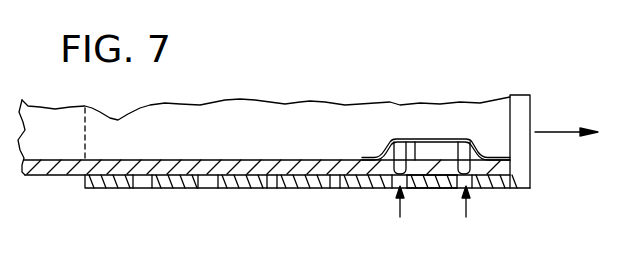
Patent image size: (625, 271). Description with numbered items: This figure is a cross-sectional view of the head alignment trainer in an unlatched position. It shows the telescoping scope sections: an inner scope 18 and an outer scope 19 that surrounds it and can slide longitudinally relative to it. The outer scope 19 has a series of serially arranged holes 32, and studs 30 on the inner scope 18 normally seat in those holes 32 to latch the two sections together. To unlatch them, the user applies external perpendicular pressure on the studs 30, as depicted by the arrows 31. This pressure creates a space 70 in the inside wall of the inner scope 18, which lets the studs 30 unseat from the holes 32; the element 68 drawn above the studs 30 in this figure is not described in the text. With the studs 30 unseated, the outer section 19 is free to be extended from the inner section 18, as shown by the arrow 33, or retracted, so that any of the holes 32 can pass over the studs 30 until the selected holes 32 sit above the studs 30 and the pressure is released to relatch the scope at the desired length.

The inner scope 18 is at (486, 112).
The outer scope 19 is at (238, 188).
The studs 30 is at (436, 185).
The arrows 31 is at (400, 213).
The holes 32 is at (337, 188).
The arrow 33 is at (555, 132).
The shell 68 is at (383, 148).
The space 70 is at (437, 152).